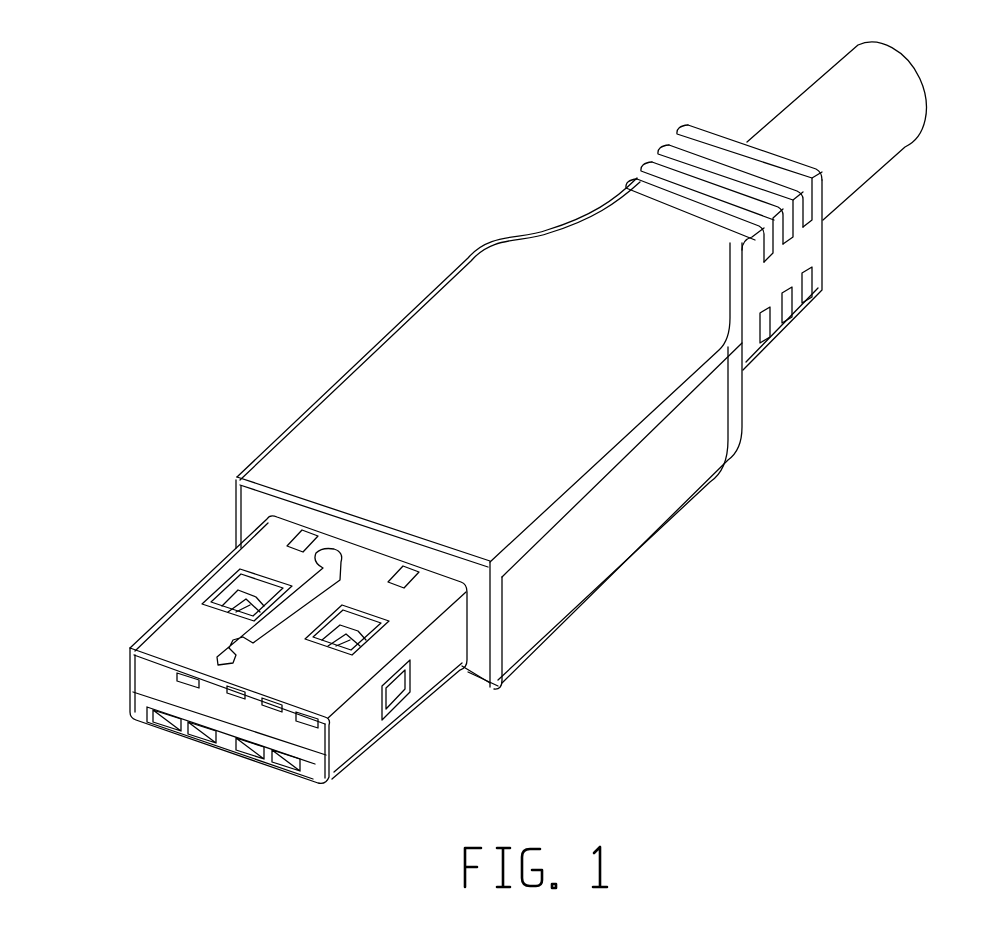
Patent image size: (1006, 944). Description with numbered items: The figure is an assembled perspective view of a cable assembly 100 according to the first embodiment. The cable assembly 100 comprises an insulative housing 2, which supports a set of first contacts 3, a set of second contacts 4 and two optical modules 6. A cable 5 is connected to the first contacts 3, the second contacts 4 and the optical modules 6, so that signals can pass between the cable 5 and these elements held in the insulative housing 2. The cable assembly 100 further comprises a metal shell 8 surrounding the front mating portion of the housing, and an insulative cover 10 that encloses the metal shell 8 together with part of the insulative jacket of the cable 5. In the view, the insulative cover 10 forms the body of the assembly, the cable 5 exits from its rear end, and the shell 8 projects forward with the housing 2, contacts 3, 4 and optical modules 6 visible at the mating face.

The cable assembly 100 is at (356, 309).
The insulative cover 10 is at (627, 528).
The cable 5 is at (848, 155).
The first contacts 3 is at (150, 663).
The insulative housing 2 is at (222, 700).
The second contacts 4 is at (243, 603).
The optical modules 6 is at (280, 760).
The metal shell 8 is at (432, 668).